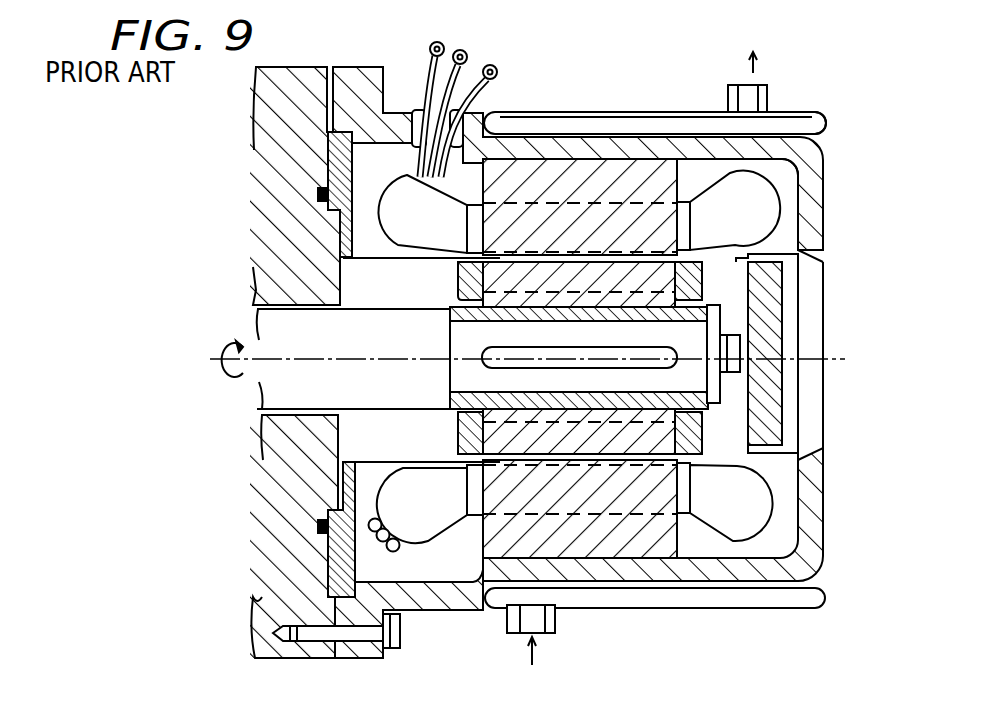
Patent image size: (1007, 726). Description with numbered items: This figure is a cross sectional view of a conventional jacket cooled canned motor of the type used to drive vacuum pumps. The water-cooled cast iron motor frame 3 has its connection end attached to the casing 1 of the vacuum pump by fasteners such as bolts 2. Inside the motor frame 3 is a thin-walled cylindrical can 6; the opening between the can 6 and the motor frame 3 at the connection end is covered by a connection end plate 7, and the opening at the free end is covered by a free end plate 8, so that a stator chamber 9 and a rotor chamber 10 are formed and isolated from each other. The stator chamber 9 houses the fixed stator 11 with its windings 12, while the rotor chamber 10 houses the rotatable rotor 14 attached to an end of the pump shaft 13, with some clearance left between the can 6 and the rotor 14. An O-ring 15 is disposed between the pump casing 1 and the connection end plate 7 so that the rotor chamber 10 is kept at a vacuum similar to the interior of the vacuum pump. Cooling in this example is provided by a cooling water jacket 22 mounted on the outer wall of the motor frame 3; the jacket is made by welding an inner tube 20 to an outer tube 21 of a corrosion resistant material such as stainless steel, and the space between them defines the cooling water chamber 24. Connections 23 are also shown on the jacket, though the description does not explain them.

The casing 1 is at (262, 90).
The bolts 2 is at (398, 637).
The motor frame 3 is at (815, 151).
The can 6 is at (405, 259).
The connection end plate 7 is at (332, 162).
The free end plate 8 is at (780, 300).
The stator chamber 9 is at (792, 200).
The rotor chamber 10 is at (735, 400).
The stator 11 is at (592, 172).
The windings 12 is at (763, 220).
The pump shaft 13 is at (262, 397).
The rotor 14 is at (641, 437).
The O-ring 15 is at (323, 527).
The inner tube 20 is at (637, 128).
The outer tube 21 is at (688, 110).
The cooling water jacket 22 is at (813, 107).
The terminal 23 is at (773, 90).
The cooling water chamber 24 is at (538, 127).